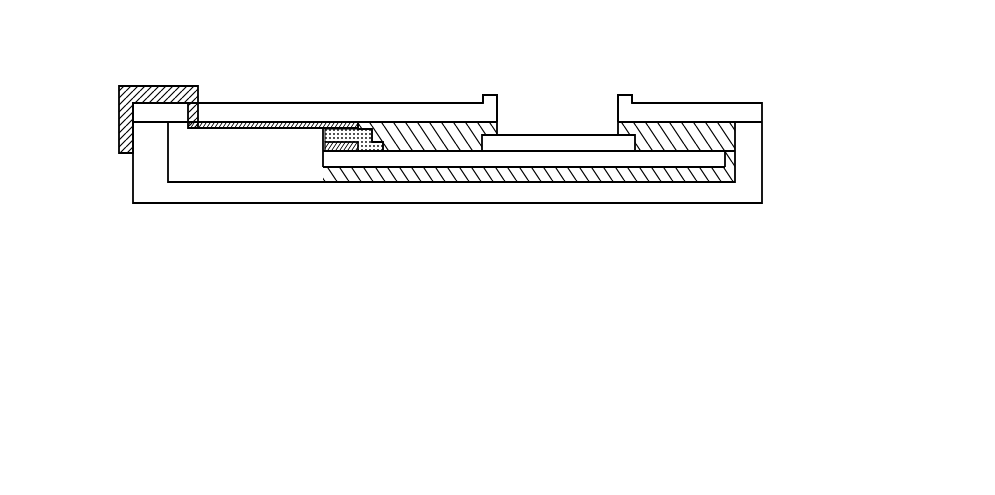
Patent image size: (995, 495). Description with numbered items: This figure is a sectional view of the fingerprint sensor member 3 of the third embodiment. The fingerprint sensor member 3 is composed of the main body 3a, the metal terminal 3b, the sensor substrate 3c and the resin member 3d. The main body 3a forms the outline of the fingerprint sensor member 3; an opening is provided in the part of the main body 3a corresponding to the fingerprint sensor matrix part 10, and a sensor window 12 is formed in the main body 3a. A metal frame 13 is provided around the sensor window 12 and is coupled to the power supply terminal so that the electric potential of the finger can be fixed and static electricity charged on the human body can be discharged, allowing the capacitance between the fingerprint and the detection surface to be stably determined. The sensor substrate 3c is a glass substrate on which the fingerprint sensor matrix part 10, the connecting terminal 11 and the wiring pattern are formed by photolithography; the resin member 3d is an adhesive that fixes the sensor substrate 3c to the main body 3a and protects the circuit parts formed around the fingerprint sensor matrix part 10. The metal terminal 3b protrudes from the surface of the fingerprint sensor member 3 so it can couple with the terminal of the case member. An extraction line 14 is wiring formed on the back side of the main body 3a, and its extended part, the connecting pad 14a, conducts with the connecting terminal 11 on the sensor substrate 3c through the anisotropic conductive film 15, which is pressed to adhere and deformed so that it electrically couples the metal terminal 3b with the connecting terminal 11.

The fingerprint sensor member 3 is at (790, 81).
The main body 3a is at (717, 112).
The metal terminal 3b is at (119, 105).
The sensor substrate 3c is at (407, 160).
The resin member 3d is at (735, 132).
The fingerprint sensor matrix part 10 is at (565, 142).
The connecting terminal 11 is at (327, 146).
The sensor window 12 is at (545, 115).
The metal frame 13 is at (625, 95).
The extraction line 14 is at (226, 136).
The connecting pad 14a is at (340, 122).
The anisotropic conductive film 15 is at (313, 135).